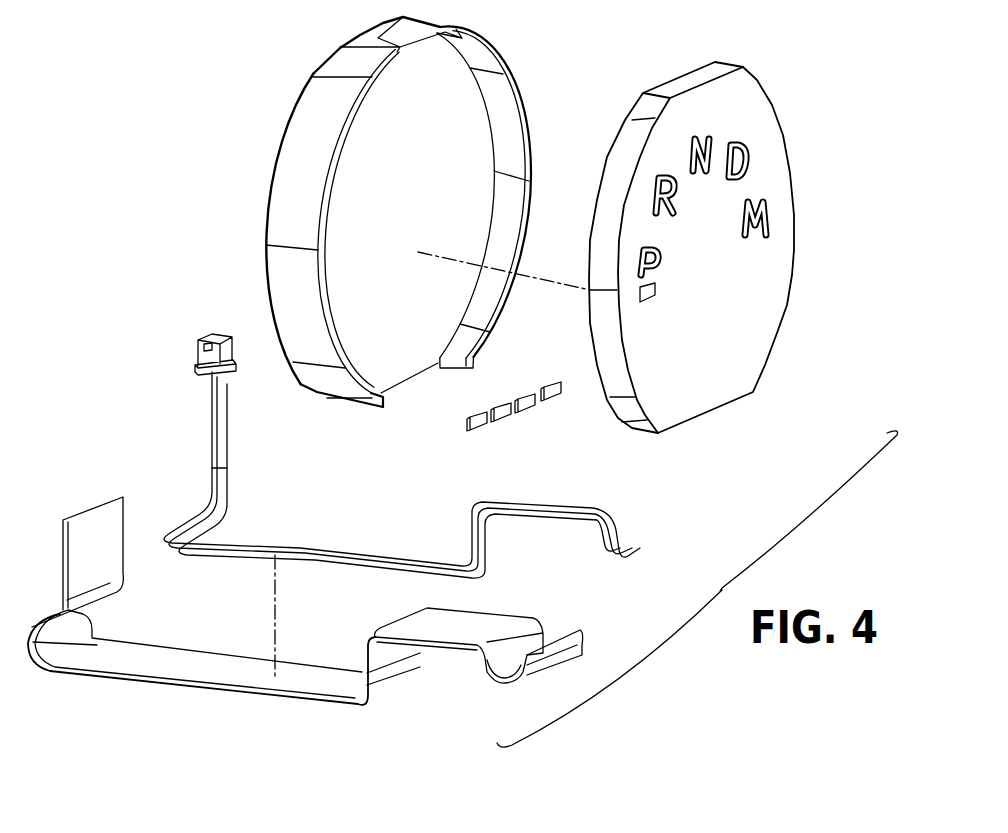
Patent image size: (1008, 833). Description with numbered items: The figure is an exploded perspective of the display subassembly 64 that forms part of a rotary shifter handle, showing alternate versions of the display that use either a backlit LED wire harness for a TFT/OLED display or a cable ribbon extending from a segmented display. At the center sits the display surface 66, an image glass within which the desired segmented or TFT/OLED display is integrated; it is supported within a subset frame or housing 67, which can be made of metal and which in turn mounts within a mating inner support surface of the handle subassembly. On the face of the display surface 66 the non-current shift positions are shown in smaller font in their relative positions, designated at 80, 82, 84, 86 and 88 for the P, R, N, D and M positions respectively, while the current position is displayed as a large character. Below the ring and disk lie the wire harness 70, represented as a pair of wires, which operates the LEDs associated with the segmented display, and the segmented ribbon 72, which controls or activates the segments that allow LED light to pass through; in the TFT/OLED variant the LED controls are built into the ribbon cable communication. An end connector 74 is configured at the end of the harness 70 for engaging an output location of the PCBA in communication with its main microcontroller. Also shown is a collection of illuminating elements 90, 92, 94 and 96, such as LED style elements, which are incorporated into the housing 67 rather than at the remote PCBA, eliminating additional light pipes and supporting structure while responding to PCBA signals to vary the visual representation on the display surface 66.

The display subassembly 64 is at (166, 220).
The display surface 66 is at (758, 330).
The subset frame or housing 67 is at (310, 106).
The wire harness 70 is at (230, 452).
The segmented ribbon 72 is at (203, 663).
The end connector 74 is at (198, 353).
The P position character 80 is at (640, 263).
The R position character 82 is at (655, 190).
The N position character 84 is at (688, 143).
The D position character 86 is at (745, 157).
The M position character 88 is at (763, 220).
The illuminating element 90 is at (478, 425).
The illuminating element 92 is at (507, 418).
The illuminating element 94 is at (535, 405).
The illuminating element 96 is at (548, 383).